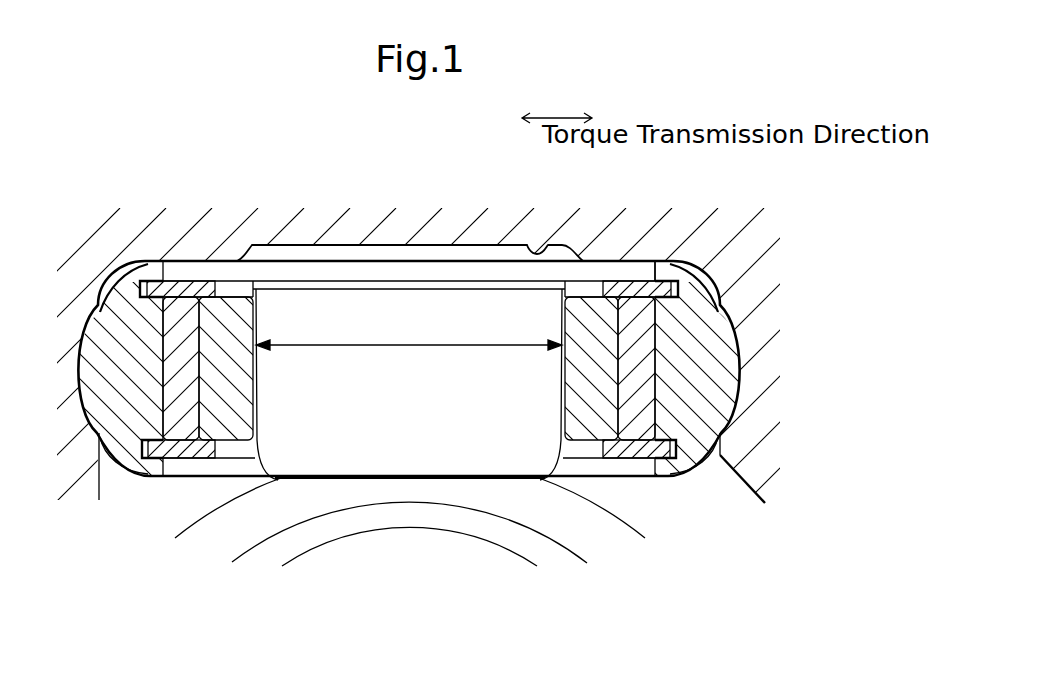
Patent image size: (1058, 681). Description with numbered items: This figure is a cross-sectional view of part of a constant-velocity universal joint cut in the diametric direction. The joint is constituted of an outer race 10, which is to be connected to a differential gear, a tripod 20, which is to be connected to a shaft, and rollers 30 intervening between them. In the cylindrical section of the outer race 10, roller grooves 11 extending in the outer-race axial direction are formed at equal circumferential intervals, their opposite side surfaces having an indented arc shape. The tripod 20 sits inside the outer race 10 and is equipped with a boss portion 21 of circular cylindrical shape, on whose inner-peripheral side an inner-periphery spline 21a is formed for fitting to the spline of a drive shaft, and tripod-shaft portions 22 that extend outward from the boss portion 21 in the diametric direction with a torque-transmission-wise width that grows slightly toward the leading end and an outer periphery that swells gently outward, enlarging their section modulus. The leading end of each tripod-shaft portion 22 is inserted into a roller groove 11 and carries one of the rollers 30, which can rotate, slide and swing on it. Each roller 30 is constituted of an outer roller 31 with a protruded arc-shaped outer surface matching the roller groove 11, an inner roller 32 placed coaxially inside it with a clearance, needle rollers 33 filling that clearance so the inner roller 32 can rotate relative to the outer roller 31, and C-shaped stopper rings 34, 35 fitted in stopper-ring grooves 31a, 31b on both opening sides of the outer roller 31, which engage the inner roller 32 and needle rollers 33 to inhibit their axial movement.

The outer race 10 is at (721, 455).
The roller grooves 11 is at (538, 252).
The tripod 20 is at (367, 569).
The boss portion 21 is at (368, 534).
The inner-periphery spline 21a is at (505, 549).
The tripod-shaft portions 22 is at (418, 373).
The rollers 30 is at (262, 275).
The outer roller 31 is at (98, 310).
The stopper-ring groove 31a is at (149, 281).
The stopper-ring groove 31b is at (150, 462).
The inner roller 32 is at (228, 305).
The needle rollers 33 is at (193, 305).
The stopper ring 34 is at (184, 281).
The stopper ring 35 is at (192, 456).